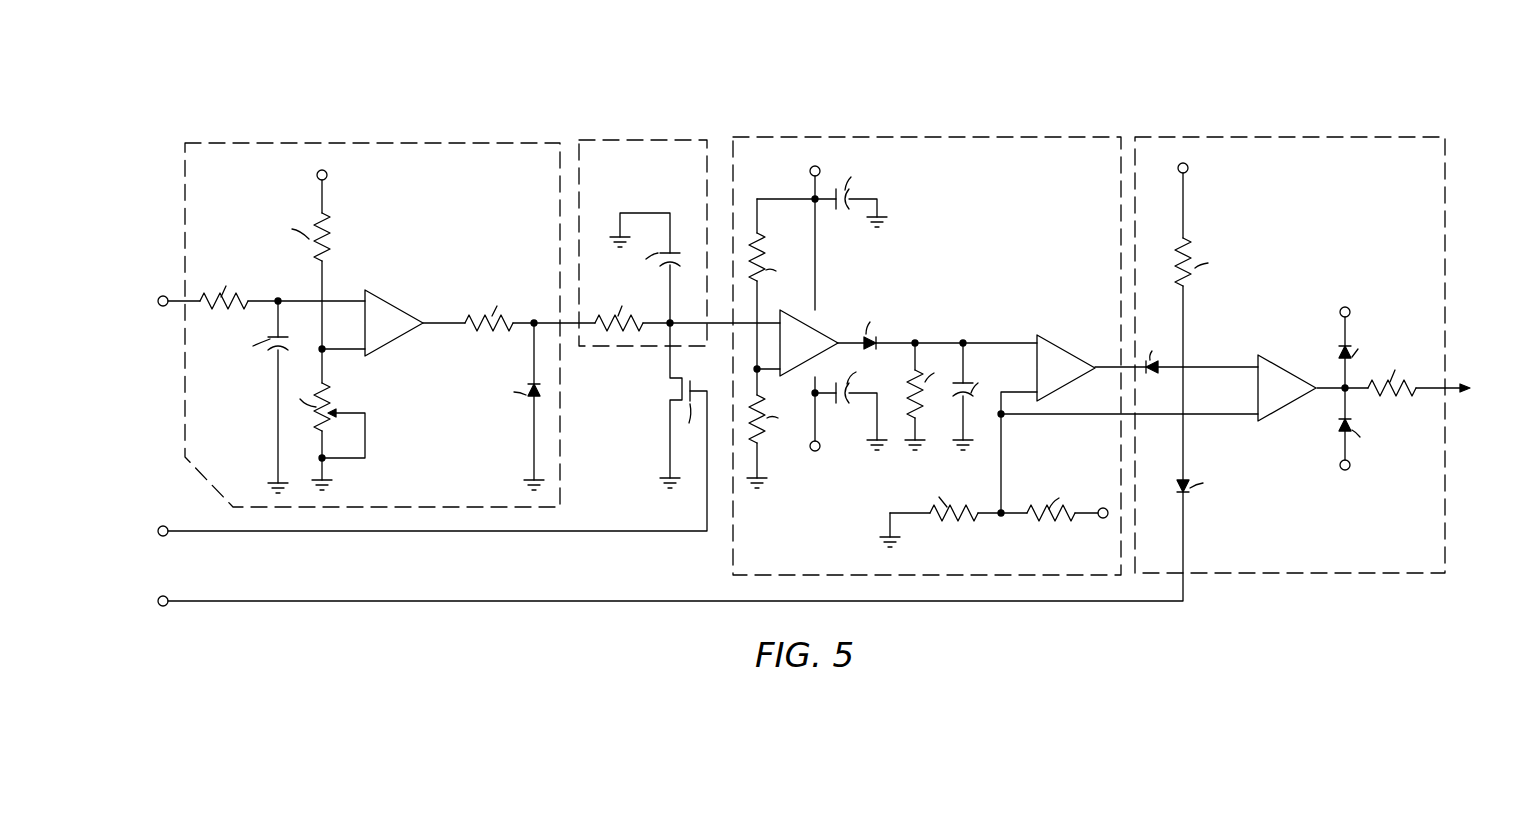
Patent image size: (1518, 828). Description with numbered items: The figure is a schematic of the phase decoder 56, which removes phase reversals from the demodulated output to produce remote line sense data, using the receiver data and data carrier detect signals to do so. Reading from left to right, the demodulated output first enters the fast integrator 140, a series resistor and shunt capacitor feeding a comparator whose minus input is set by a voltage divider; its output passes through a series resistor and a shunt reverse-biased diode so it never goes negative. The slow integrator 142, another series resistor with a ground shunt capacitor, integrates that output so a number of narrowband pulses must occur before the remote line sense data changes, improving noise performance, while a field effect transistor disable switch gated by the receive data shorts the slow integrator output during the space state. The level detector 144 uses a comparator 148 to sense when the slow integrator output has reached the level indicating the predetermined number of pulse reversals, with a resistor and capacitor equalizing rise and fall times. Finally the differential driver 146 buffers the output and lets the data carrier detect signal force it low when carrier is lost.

The phase decoder 56 is at (1028, 105).
The fast integrator 140 is at (375, 132).
The slow integrator 142 is at (616, 137).
The level detector 144 is at (870, 137).
The differential driver 146 is at (1226, 135).
The comparator 148 is at (891, 249).